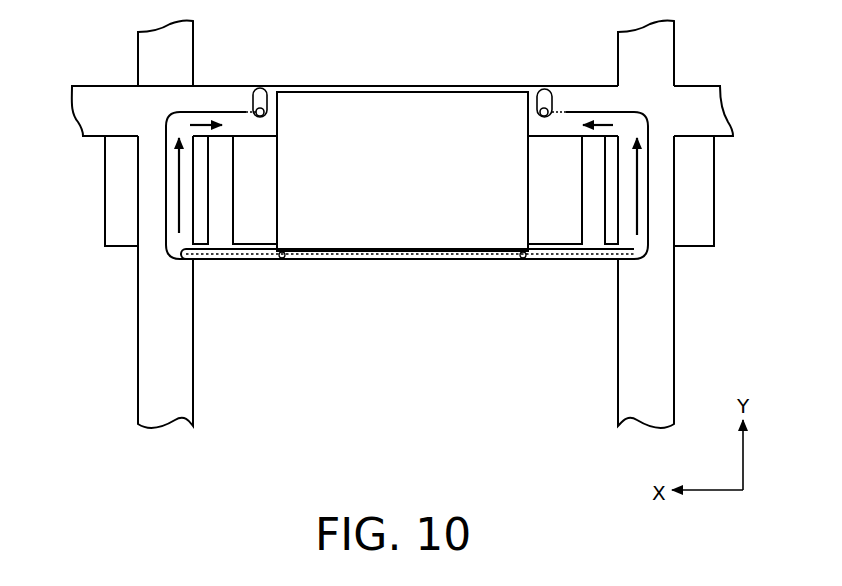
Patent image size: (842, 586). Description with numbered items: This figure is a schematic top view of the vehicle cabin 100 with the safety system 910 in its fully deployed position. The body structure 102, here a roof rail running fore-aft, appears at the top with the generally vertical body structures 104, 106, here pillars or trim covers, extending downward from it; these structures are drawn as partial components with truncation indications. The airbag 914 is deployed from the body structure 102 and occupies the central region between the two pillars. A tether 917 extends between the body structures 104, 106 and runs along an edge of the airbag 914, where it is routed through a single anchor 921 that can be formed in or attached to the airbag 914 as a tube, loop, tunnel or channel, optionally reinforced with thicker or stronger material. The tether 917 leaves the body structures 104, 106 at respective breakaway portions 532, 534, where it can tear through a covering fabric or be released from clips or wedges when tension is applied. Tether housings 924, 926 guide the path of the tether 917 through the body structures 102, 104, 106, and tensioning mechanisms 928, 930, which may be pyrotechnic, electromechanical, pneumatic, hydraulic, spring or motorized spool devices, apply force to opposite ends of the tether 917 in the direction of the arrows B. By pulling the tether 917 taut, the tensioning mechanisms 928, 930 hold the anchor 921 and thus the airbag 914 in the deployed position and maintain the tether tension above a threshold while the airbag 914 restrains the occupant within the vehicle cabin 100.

The vehicle cabin 100 is at (427, 386).
The body structure 102 is at (96, 86).
The body structure 104 is at (138, 390).
The body structure 106 is at (617, 389).
The safety system 910 is at (285, 342).
The airbag 914 is at (395, 90).
The tether 917 is at (408, 257).
The anchor 921 is at (335, 262).
The tether housing 924 is at (223, 112).
The tether housing 926 is at (587, 112).
The tensioning mechanism 928 is at (260, 88).
The tensioning mechanism 930 is at (543, 89).
The breakaway portion 532 is at (177, 264).
The breakaway portion 534 is at (640, 263).
The arrows B is at (180, 178).